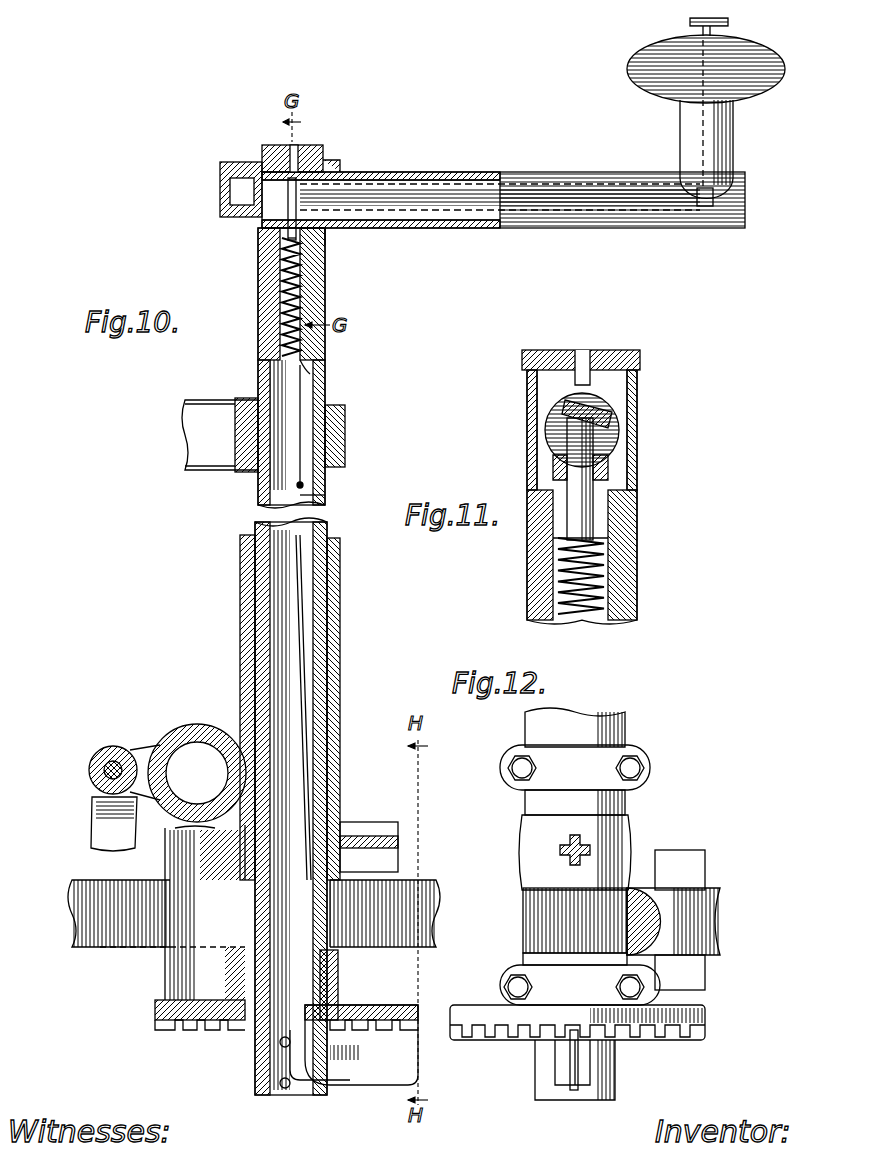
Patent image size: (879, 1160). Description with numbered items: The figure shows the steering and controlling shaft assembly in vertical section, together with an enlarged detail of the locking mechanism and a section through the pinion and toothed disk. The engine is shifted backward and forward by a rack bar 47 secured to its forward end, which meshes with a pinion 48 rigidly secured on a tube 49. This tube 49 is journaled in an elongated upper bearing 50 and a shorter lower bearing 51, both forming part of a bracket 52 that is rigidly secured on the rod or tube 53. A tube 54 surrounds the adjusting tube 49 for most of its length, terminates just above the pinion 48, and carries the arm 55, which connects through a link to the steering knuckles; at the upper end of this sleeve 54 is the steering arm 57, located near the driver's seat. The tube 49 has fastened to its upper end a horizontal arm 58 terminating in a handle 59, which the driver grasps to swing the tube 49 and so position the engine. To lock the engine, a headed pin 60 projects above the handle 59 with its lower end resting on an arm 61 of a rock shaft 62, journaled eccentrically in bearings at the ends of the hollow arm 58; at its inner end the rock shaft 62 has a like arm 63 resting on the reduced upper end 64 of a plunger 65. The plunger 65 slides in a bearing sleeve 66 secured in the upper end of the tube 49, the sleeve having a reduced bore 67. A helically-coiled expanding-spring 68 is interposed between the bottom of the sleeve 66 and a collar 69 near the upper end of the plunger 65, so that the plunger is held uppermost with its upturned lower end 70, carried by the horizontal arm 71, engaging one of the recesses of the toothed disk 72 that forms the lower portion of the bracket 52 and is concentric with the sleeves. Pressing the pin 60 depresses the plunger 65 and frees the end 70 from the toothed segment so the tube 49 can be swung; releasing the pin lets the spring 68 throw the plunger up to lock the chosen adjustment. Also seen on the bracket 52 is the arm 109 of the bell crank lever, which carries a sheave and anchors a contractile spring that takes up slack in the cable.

In FIG. 10, the rack bar 47 is at (440, 865).
In FIG. 12, the rack bar 47 is at (640, 915).
In FIG. 10, the pinion 48 is at (335, 930).
In FIG. 12, the pinion 48 is at (523, 902).
In FIG. 10, the tube 49 is at (325, 355).
In FIG. 11, the tube 49 is at (527, 578).
In FIG. 10, the elongated upper bearing 50 is at (340, 645).
In FIG. 12, the elongated upper bearing 50 is at (605, 722).
In FIG. 10, the lower bearing 51 is at (325, 975).
In FIG. 12, the lower bearing 51 is at (523, 958).
In FIG. 10, the bracket 52 is at (185, 856).
In FIG. 10, the rod or tube 53 is at (203, 738).
In FIG. 10, the tube 54 is at (325, 495).
In FIG. 10, the arm 55 is at (380, 822).
In FIG. 12, the arm 55 is at (585, 840).
In FIG. 10, the steering arm 57 is at (210, 385).
In FIG. 10, the horizontal arm 58 is at (435, 226).
In FIG. 10, the handle 59 is at (680, 80).
In FIG. 10, the headed pin 60 is at (728, 22).
In FIG. 10, the arm 61 is at (713, 192).
In FIG. 10, the rock shaft 62 is at (430, 195).
In FIG. 11, the rock shaft 62 is at (608, 418).
In FIG. 10, the arm 63 is at (300, 165).
In FIG. 11, the arm 63 is at (585, 388).
In FIG. 10, the reduced upper end 64 is at (325, 236).
In FIG. 11, the reduced upper end 64 is at (568, 432).
In FIG. 10, the plunger 65 is at (290, 232).
In FIG. 11, the plunger 65 is at (582, 500).
In FIG. 10, the bearing sleeve 66 is at (300, 275).
In FIG. 11, the bearing sleeve 66 is at (604, 590).
In FIG. 10, the reduced bore 67 is at (310, 372).
In FIG. 10, the helically-coiled expanding-spring 68 is at (283, 290).
In FIG. 11, the helically-coiled expanding-spring 68 is at (575, 612).
In FIG. 10, the collar 69 is at (275, 228).
In FIG. 11, the collar 69 is at (608, 470).
In FIG. 10, the upturned lower end 70 is at (395, 1035).
In FIG. 12, the upturned lower end 70 is at (578, 1040).
In FIG. 10, the horizontal arm 71 is at (365, 1050).
In FIG. 12, the horizontal arm 71 is at (574, 1090).
In FIG. 10, the toothed disk 72 is at (155, 1007).
In FIG. 12, the toothed disk 72 is at (488, 1025).
In FIG. 10, the arm 109 is at (100, 828).